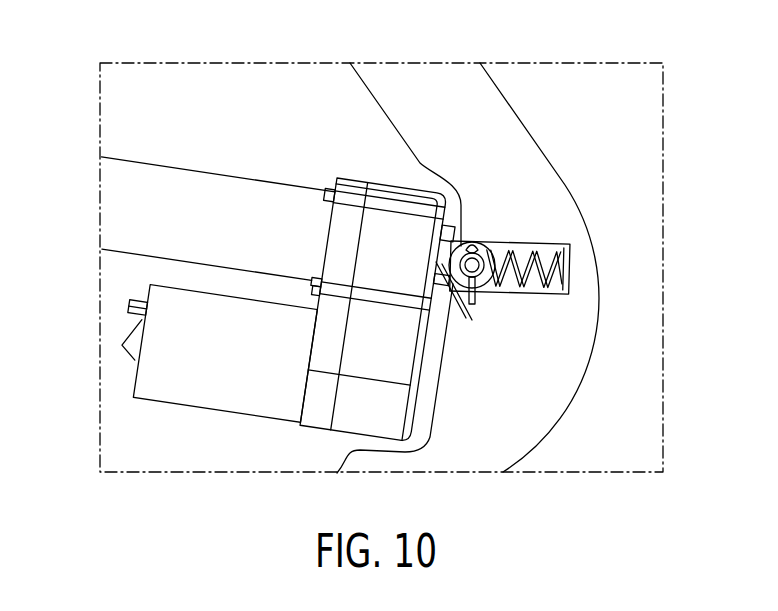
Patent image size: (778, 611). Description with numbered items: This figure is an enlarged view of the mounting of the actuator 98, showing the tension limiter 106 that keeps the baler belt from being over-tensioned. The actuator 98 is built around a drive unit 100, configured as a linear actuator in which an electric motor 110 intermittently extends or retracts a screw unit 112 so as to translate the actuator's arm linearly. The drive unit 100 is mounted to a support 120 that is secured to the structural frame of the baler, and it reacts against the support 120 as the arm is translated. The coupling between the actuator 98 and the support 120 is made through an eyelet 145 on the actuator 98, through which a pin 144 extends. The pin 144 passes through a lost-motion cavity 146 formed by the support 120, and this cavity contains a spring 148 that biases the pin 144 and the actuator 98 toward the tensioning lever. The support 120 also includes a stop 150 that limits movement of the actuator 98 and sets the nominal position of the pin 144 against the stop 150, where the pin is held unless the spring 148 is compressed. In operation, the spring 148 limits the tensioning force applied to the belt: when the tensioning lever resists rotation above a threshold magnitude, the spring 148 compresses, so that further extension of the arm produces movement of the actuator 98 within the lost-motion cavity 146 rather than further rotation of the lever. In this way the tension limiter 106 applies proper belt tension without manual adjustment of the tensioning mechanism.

The actuator 98 is at (207, 193).
The drive unit 100 is at (340, 427).
The tension limiter 106 is at (621, 232).
The motor 110 is at (229, 390).
The screw unit 112 is at (343, 242).
The support 120 is at (503, 120).
The pin 144 is at (480, 296).
The eyelet 145 is at (483, 240).
The lost-motion cavity 146 is at (553, 240).
The spring 148 is at (480, 296).
The stop 150 is at (466, 318).